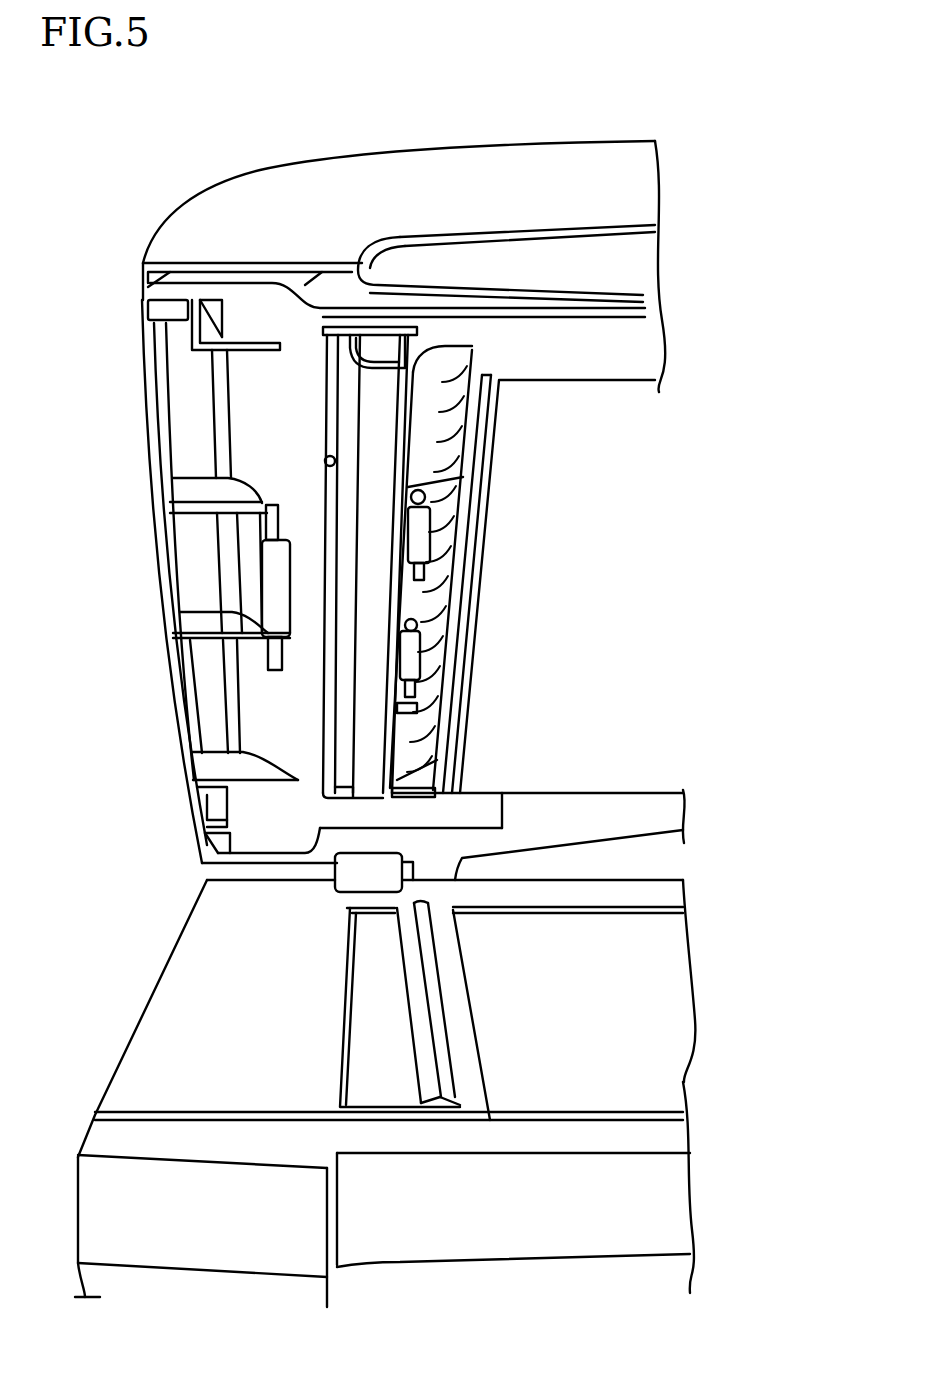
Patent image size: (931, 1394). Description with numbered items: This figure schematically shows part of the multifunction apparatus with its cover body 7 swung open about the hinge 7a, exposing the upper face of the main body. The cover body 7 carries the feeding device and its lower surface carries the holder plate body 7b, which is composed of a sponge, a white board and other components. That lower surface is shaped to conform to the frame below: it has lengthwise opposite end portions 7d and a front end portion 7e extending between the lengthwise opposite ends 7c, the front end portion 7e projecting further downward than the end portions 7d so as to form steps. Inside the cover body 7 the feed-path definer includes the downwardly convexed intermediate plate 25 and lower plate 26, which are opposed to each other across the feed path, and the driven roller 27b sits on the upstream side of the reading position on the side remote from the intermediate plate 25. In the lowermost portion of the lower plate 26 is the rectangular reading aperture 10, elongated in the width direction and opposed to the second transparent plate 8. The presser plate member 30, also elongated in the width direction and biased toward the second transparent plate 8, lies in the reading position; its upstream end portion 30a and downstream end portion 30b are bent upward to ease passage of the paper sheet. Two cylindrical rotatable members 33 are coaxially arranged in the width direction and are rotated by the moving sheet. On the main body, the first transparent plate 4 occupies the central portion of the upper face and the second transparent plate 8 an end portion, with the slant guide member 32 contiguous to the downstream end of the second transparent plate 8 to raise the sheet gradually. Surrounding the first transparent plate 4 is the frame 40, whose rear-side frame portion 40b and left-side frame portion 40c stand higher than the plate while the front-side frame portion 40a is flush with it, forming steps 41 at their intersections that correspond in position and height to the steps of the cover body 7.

The cover body 7 is at (237, 217).
The hinge 7a is at (355, 870).
The holder plate body 7b is at (628, 541).
The lengthwise opposite ends of the cover body 7c is at (142, 298).
The lengthwise opposite end portions of the cover body 7d is at (148, 380).
The front end portion of the cover body 7e is at (310, 263).
The first transparent plate 4 is at (595, 1063).
The second transparent plate 8 is at (384, 1005).
The reading aperture 10 is at (326, 464).
The intermediate plate 25 is at (447, 427).
The lower plate 26 is at (308, 763).
The driven roller 27b is at (266, 584).
The presser plate member 30 is at (370, 658).
The upstream end portion of the presser plate member 30a is at (358, 392).
The downstream end portion of the presser plate member 30b is at (414, 378).
The slant guide member 32 is at (414, 984).
The rotatable members 33 is at (424, 716).
The frame 40 is at (202, 977).
The front-side frame portion 40a is at (522, 1138).
The rear-side frame portion 40b is at (617, 903).
The left-side frame portion 40c is at (145, 1053).
The steps 41 is at (120, 1140).